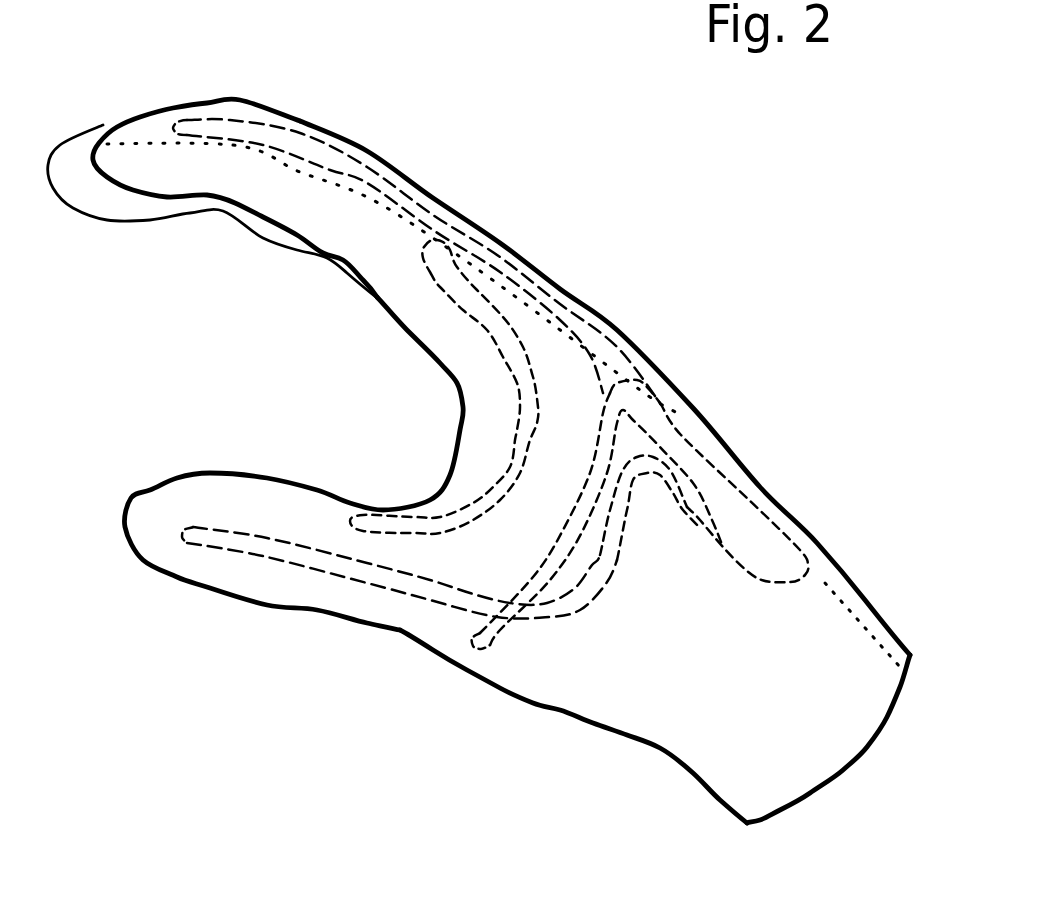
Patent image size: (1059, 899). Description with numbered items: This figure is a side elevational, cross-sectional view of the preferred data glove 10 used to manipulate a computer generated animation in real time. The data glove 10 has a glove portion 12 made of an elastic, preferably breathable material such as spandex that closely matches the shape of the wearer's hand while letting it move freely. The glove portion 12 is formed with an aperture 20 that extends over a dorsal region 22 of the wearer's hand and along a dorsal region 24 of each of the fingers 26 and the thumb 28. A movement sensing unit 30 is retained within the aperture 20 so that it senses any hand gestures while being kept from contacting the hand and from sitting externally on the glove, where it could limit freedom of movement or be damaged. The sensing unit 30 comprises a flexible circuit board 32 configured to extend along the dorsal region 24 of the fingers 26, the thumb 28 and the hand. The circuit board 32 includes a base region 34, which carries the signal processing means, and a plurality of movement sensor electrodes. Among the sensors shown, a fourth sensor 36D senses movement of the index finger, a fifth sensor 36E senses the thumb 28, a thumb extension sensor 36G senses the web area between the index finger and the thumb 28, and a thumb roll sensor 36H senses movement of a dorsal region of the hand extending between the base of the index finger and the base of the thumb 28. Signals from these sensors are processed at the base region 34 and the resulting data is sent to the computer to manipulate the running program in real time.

The data glove 10 is at (422, 672).
The glove portion 12 is at (690, 780).
The aperture 20 is at (232, 127).
The dorsal region of the hand 22 is at (860, 630).
The dorsal region of the fingers and thumb 24 is at (293, 167).
The fingers 26 is at (227, 180).
The thumb 28 is at (227, 582).
The movement sensing unit 30 is at (805, 586).
The flexible circuit board 32 is at (678, 521).
The base region 34 is at (740, 500).
The fourth sensor 36D is at (378, 160).
The fifth sensor 36E is at (307, 570).
The thumb extension sensor 36G is at (403, 530).
The thumb roll sensor 36H is at (493, 632).